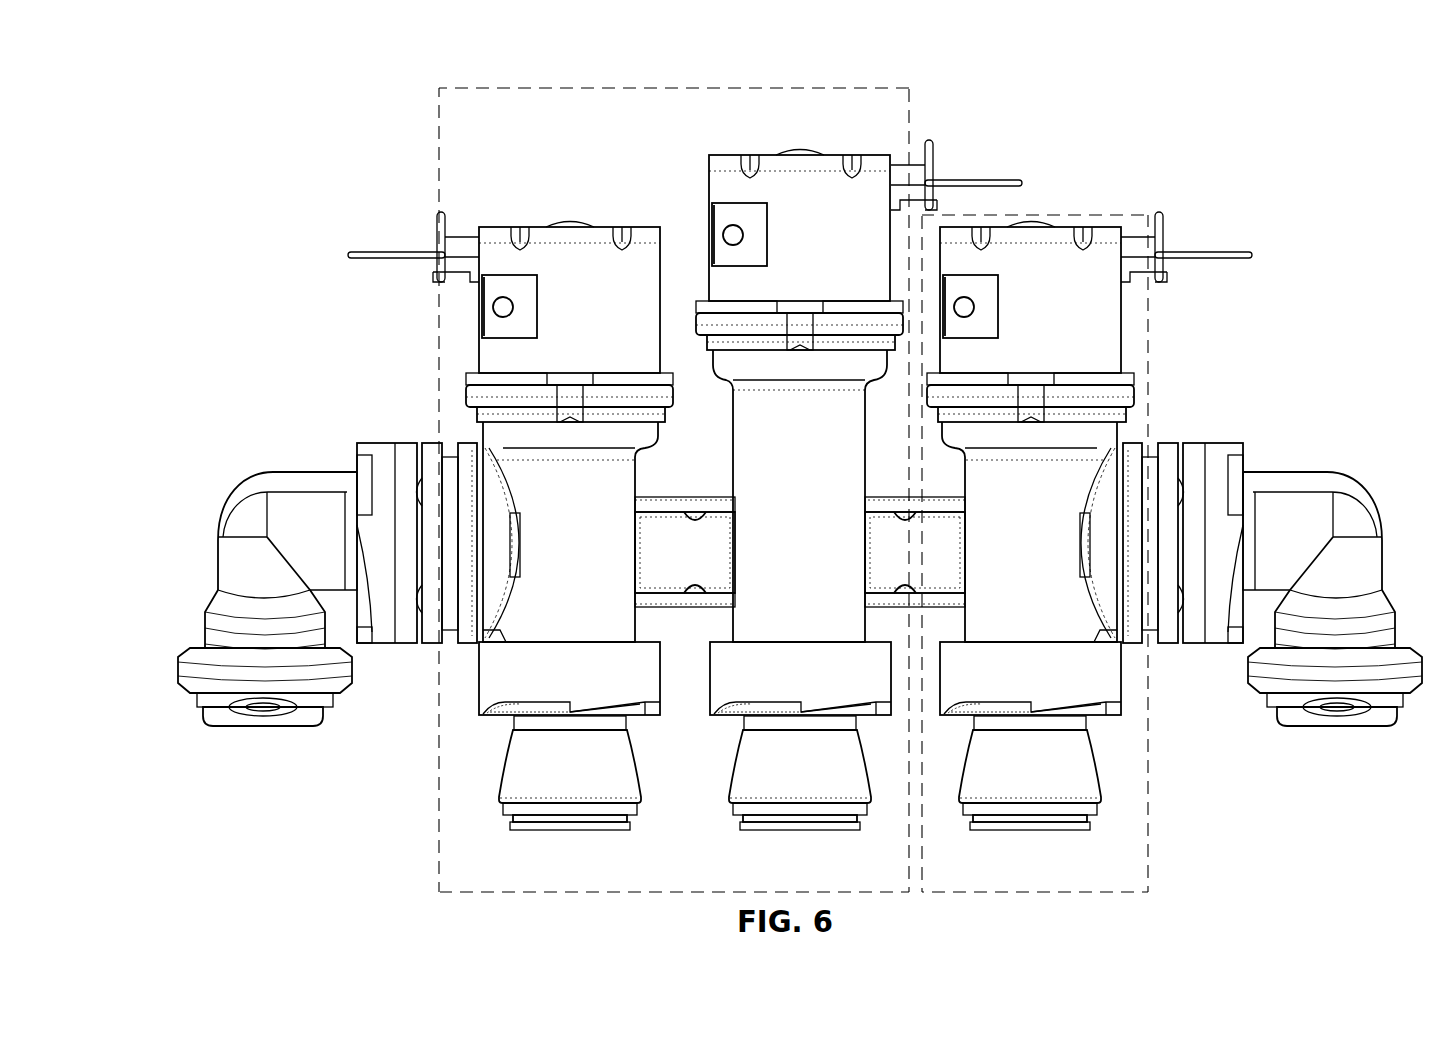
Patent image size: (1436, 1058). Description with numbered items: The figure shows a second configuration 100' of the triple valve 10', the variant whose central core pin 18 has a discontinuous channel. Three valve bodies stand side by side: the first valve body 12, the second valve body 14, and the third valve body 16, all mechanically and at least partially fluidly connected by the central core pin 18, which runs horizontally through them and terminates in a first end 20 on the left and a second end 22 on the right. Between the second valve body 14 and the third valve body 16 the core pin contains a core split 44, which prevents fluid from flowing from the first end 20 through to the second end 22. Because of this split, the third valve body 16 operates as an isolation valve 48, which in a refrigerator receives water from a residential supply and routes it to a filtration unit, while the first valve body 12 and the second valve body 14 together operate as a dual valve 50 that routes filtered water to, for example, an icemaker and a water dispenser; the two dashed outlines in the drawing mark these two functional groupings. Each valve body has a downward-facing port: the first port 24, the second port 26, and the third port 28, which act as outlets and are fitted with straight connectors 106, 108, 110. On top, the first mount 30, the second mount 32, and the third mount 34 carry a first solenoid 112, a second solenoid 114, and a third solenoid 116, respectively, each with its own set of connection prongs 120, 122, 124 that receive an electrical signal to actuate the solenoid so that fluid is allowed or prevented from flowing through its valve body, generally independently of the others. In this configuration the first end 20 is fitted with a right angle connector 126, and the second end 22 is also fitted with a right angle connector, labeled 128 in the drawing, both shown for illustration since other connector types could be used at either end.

The second configuration 100' is at (784, 490).
The triple valve 10' is at (1079, 554).
The first valve body 12 is at (625, 482).
The second valve body 14 is at (840, 432).
The third valve body 16 is at (973, 482).
The central core pin 18 is at (691, 608).
The first end 20 is at (403, 432).
The second end 22 is at (1200, 440).
The first port 24 is at (490, 712).
The second port 26 is at (720, 712).
The third port 28 is at (940, 712).
The first mount 30 is at (481, 395).
The second mount 32 is at (712, 318).
The third mount 34 is at (1131, 416).
The core split 44 is at (940, 552).
The isolation valve 48 is at (1125, 215).
The dual valve 50 is at (483, 88).
The straight connector 106 is at (545, 790).
The straight connector 108 is at (775, 790).
The straight connector 110 is at (1005, 790).
The first solenoid 112 is at (548, 265).
The second solenoid 114 is at (781, 202).
The third solenoid 116 is at (1063, 265).
The first set of connection prongs 120 is at (353, 252).
The second set of connection prongs 122 is at (1001, 183).
The third set of connection prongs 124 is at (1229, 250).
The right angle connector 126 is at (293, 512).
The elbow inlet fitting 128 is at (1307, 512).